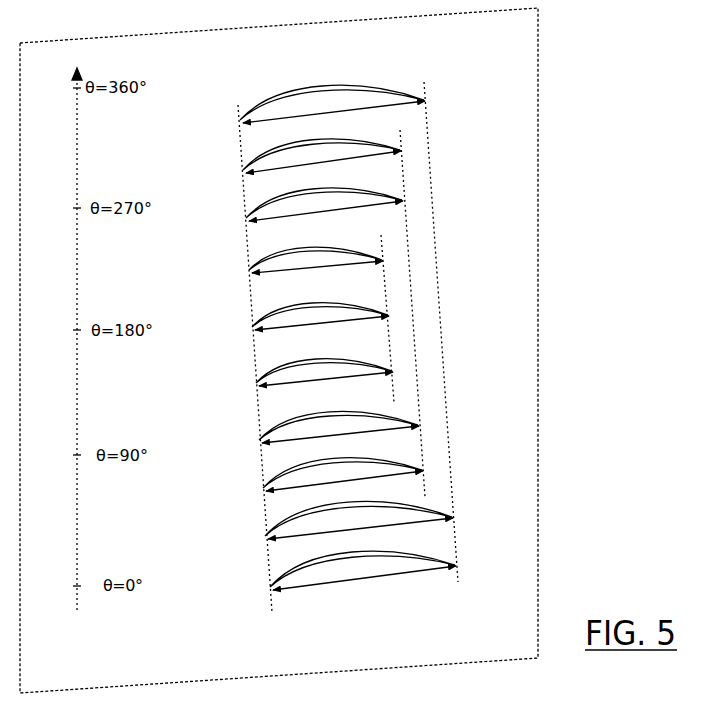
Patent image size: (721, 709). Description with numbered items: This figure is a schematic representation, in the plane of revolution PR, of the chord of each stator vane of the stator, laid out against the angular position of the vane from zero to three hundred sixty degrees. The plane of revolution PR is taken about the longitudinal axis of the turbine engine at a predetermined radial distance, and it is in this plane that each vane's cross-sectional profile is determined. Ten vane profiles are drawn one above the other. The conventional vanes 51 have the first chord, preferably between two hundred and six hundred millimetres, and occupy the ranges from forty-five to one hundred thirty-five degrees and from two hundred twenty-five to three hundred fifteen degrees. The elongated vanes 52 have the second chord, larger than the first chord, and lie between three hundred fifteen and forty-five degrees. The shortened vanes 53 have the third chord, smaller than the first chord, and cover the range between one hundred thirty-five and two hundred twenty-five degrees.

The plane of revolution PR is at (535, 68).
The conventional vane 51 is at (241, 167).
The elongated vane 52 is at (238, 117).
The shortened vane 53 is at (247, 267).